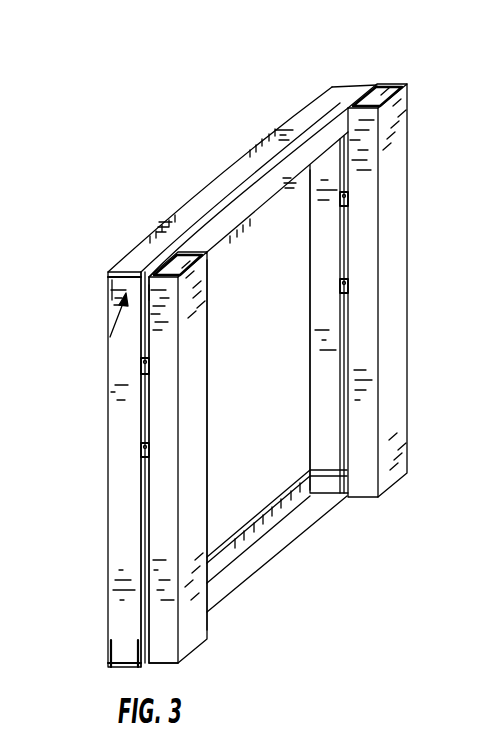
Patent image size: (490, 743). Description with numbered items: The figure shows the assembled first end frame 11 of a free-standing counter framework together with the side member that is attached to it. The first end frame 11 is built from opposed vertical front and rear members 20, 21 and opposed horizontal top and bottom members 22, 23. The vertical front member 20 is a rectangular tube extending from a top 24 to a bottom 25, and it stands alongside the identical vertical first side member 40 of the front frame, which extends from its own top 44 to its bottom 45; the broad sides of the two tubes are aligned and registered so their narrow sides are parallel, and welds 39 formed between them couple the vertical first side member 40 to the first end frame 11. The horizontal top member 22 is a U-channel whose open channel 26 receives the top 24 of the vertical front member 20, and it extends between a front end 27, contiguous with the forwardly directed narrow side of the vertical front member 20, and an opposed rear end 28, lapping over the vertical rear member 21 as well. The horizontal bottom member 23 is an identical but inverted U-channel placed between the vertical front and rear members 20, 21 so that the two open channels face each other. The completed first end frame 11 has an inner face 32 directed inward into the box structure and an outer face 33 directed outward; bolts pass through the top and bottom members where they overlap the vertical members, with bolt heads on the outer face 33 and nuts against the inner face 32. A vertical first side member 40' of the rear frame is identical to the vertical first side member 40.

The first end frame 11 is at (245, 163).
The vertical front member 20 is at (108, 512).
The vertical rear member 21 is at (310, 296).
The horizontal top member 22 is at (177, 214).
The horizontal bottom member 23 is at (283, 550).
The top 24 is at (117, 289).
The bottom 25 is at (123, 652).
The open channel 26 is at (110, 337).
The front end 27 is at (123, 269).
The rear end 28 is at (342, 92).
The inner face 32 is at (267, 182).
The outer face 33 is at (226, 200).
The welds 39 is at (147, 440).
The vertical first side member 40 is at (201, 478).
The vertical first side member 40' is at (410, 290).
The top 44 is at (166, 294).
The bottom 45 is at (166, 653).